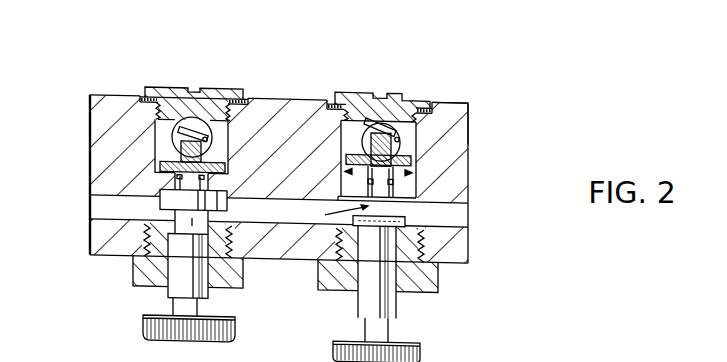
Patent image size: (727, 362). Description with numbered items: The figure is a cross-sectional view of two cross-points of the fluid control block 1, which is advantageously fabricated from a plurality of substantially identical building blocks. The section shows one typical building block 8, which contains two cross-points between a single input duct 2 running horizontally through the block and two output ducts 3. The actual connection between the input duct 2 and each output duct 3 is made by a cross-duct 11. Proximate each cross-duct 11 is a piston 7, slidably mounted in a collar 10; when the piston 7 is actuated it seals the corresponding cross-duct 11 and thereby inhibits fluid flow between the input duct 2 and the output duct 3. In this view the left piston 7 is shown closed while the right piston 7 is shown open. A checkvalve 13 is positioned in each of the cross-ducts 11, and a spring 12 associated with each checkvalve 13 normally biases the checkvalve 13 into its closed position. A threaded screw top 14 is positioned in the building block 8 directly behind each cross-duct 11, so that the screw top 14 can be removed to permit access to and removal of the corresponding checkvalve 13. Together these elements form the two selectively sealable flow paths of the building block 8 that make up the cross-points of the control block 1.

The control block 1 is at (90, 168).
The input duct 2 is at (110, 208).
The output duct 3 is at (198, 128).
The piston 7 is at (215, 208).
The building block 8 is at (472, 101).
The collar 10 is at (148, 270).
The cross-duct 11 is at (160, 203).
The spring 12 is at (162, 163).
The checkvalve 13 is at (170, 152).
The threaded screw top 14 is at (180, 92).